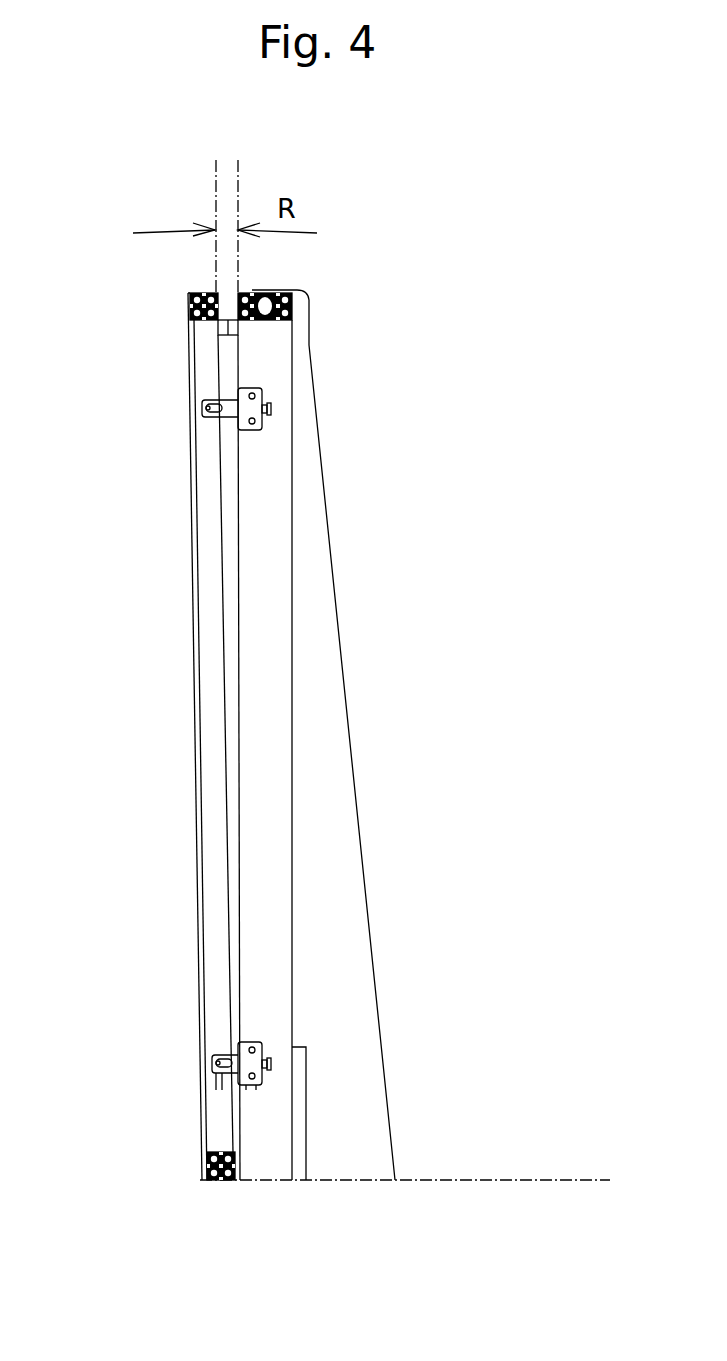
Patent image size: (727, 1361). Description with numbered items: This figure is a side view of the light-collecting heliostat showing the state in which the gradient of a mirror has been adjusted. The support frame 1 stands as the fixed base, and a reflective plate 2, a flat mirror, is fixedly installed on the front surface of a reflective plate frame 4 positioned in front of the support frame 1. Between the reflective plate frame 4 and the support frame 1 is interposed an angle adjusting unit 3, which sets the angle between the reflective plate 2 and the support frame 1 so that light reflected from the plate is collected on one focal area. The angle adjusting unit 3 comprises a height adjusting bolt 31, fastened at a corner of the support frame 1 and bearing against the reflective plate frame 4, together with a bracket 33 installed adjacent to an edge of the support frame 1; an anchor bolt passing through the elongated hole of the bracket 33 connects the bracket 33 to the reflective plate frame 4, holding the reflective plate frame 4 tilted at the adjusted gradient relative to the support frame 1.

The support frame 1 is at (282, 540).
The reflective plate 2 is at (194, 621).
The angle adjusting unit 3 is at (82, 285).
The height adjusting bolt 31 is at (228, 320).
The bracket 33 is at (245, 432).
The reflective plate frame 4 is at (208, 736).